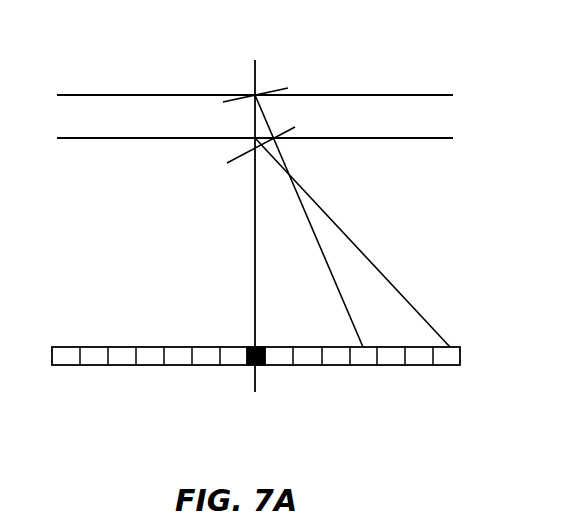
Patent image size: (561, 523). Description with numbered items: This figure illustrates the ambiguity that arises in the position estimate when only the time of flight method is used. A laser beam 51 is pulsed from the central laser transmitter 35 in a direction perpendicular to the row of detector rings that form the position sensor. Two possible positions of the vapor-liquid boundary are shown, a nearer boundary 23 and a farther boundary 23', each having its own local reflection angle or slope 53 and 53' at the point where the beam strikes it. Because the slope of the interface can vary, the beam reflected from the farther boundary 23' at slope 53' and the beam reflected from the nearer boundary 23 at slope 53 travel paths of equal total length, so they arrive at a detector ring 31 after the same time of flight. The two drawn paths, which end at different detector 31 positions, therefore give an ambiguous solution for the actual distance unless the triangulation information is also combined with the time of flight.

The vapor-liquid boundary 23 is at (255, 174).
The vapor-liquid boundary at alternate position 23' is at (255, 62).
The detector ring 31 is at (358, 365).
The central laser transmitter 35 is at (253, 367).
The laser beam 51 is at (308, 314).
The reflection angle (slope) of the vapor-liquid interface 53 is at (248, 176).
The reflection angle (slope) at alternate boundary position 53' is at (250, 65).